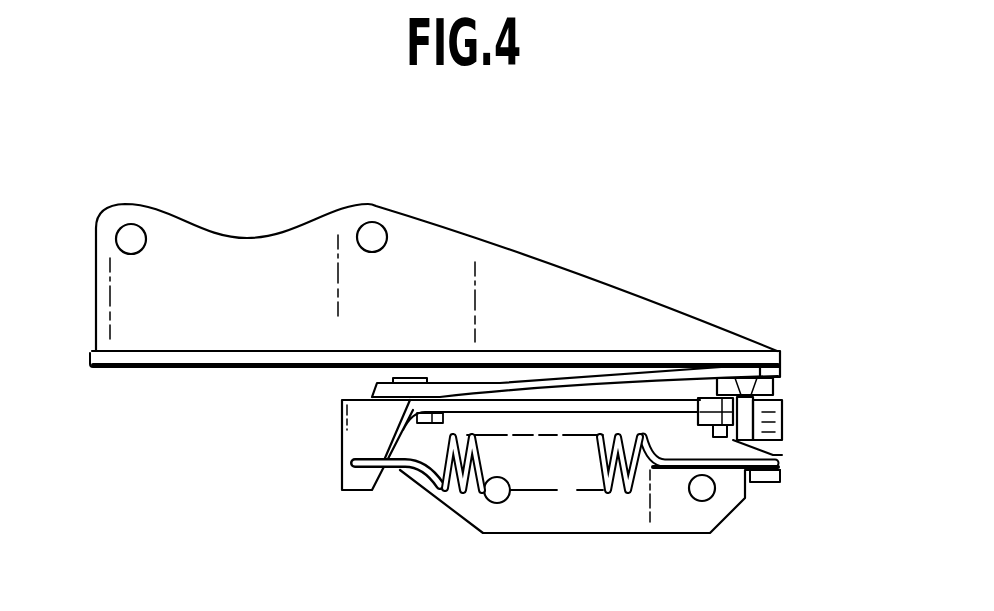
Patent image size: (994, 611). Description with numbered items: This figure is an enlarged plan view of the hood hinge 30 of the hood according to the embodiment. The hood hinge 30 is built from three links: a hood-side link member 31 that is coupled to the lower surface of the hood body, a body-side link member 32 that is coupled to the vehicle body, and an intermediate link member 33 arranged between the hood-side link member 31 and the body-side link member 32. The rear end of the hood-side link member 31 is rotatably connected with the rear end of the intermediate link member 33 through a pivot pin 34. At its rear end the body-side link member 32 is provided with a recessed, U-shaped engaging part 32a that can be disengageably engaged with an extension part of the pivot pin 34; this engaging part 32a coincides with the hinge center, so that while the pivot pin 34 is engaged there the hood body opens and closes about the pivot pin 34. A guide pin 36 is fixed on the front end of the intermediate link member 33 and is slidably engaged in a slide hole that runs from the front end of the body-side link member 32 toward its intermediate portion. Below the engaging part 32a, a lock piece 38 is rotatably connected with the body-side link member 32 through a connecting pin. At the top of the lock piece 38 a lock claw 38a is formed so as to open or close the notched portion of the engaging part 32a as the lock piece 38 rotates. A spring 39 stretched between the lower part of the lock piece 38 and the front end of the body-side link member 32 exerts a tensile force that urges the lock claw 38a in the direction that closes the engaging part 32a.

The hood hinge 30 is at (613, 255).
The hood-side link member 31 is at (312, 351).
The body-side link member 32 is at (563, 412).
The engaging part 32a is at (781, 351).
The intermediate link member 33 is at (508, 380).
The pivot pin 34 is at (770, 440).
The guide pin 36 is at (400, 378).
The lock piece 38 is at (782, 410).
The lock claw 38a is at (727, 395).
The spring 39 is at (460, 490).